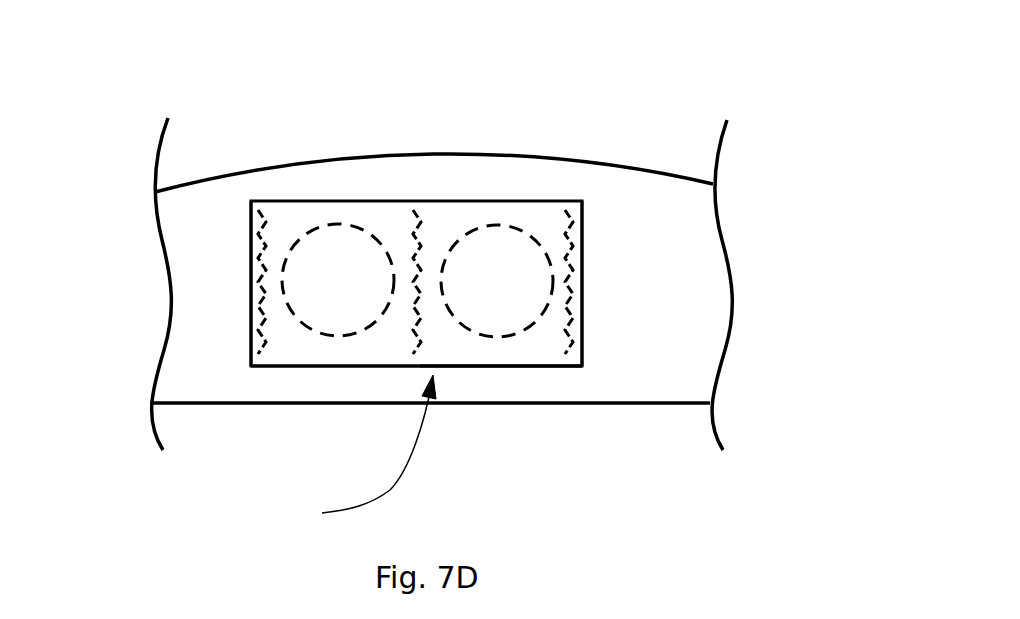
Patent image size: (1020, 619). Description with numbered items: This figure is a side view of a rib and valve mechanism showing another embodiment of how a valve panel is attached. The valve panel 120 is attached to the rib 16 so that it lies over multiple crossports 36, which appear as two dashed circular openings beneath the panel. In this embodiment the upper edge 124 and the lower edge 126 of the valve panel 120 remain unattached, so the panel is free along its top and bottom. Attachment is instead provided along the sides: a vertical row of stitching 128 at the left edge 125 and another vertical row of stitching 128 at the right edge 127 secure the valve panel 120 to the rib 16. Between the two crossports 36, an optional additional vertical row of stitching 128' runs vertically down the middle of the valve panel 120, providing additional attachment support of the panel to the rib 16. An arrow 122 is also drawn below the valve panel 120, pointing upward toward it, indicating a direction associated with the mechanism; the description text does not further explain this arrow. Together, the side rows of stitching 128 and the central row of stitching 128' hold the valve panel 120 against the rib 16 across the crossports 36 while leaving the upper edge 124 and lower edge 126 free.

The rib 16 is at (685, 357).
The crossports 36 is at (537, 242).
The valve panel 120 is at (549, 342).
The direction of travel arrow 122 is at (358, 452).
The upper edge 124 is at (470, 207).
The left edge 125 is at (250, 278).
The lower edge 126 is at (492, 357).
The right edge 127 is at (582, 296).
The vertical row of stitching 128 is at (474, 200).
The additional vertical row of stitching 128' is at (373, 200).